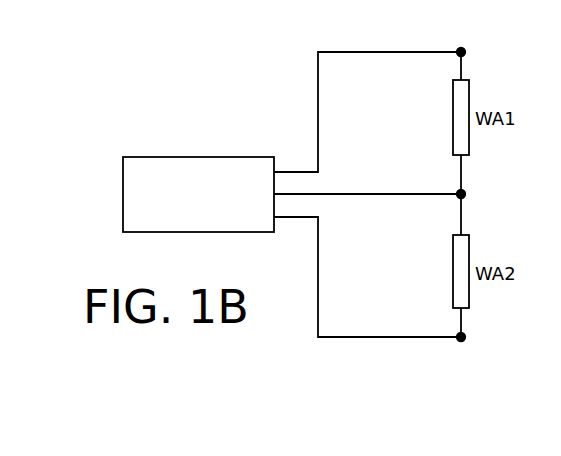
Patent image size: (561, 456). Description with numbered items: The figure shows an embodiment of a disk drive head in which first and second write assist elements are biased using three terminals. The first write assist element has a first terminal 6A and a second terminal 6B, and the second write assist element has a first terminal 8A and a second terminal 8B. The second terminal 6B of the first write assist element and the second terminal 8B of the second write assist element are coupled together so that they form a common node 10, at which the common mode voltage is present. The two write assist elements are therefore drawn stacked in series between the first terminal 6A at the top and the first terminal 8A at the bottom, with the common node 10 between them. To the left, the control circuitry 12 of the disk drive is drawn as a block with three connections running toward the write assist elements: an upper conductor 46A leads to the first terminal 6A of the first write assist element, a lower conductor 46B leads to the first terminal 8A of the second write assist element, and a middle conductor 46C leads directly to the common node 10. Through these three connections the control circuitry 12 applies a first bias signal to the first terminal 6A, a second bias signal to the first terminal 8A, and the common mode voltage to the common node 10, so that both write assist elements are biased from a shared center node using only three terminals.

The control circuitry 12 is at (193, 157).
The first wire / conductor to terminal 6A 46A is at (367, 52).
The second wire / conductor to terminal 8A 46B is at (367, 337).
The third wire / conductor to center node 46C is at (367, 194).
The first terminal 6A is at (461, 67).
The second terminal 6B is at (461, 170).
The first terminal 8A is at (461, 320).
The second terminal 8B is at (461, 214).
The common node 10 is at (458, 197).